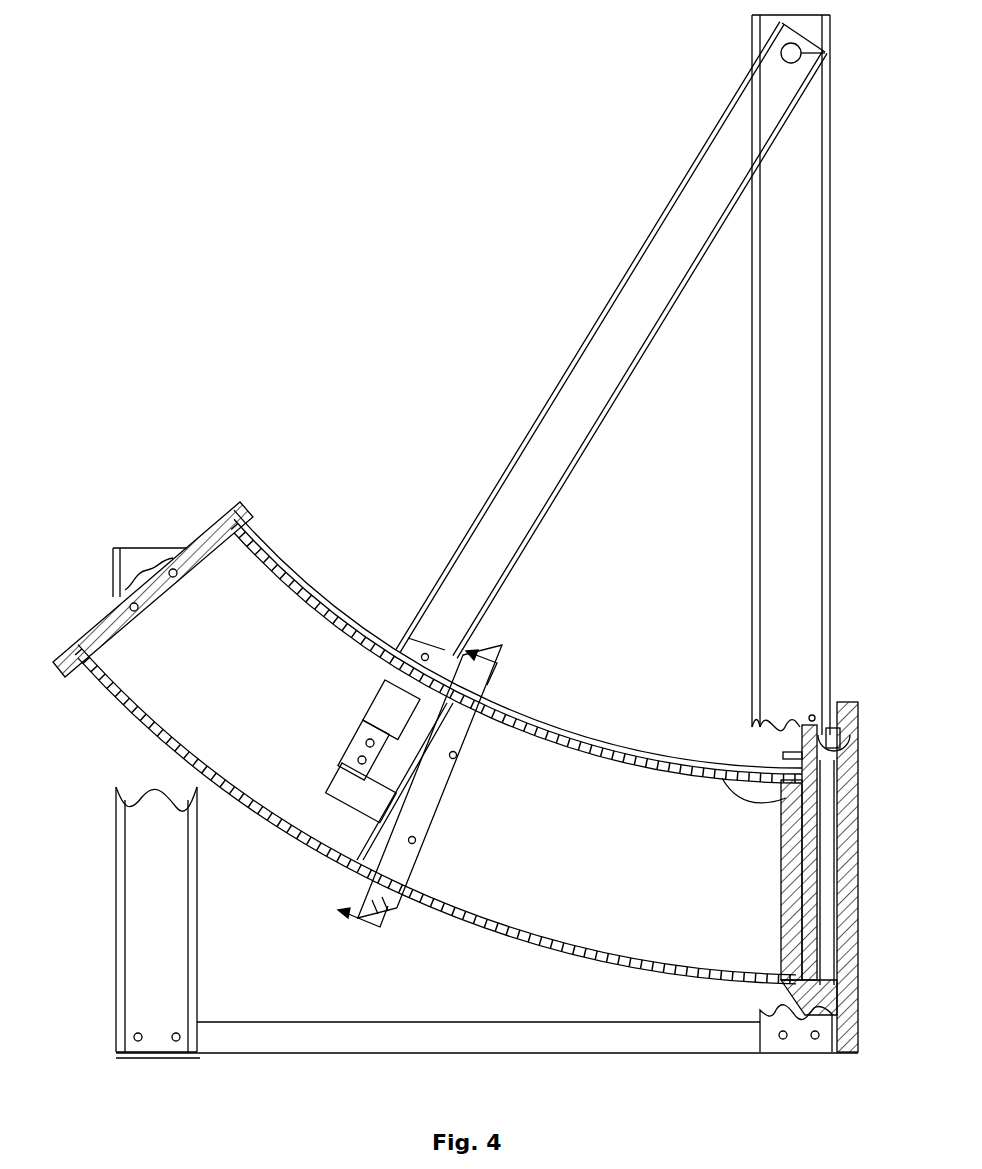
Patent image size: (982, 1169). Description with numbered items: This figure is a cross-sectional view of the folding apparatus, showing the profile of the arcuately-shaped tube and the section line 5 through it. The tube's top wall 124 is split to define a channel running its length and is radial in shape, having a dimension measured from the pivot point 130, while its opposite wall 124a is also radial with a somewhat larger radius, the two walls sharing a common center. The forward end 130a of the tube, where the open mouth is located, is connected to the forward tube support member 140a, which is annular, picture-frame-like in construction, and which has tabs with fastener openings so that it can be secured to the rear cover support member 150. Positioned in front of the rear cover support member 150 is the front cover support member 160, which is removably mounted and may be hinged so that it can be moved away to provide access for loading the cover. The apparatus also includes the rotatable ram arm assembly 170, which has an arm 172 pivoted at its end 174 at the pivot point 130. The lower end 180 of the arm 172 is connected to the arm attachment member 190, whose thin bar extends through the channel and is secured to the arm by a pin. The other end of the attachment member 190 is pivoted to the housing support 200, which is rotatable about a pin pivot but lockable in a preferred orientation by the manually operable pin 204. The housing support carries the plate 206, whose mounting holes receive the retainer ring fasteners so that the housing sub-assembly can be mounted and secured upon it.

The top wall 124 is at (317, 590).
The opposite wall 124a is at (445, 904).
The pivot point 130 is at (828, 50).
The forward end 130a is at (718, 766).
The forward tube support member 140a is at (781, 874).
The rear cover support member 150 is at (860, 746).
The front cover support member 160 is at (842, 702).
The rotatable ram arm assembly 170 is at (611, 340).
The arm 172 is at (610, 337).
The end 174 is at (717, 136).
The lower end 180 is at (414, 635).
The arm attachment member 190 is at (356, 758).
The housing support 200 is at (344, 792).
The manually operable pin 204 is at (366, 736).
The plate 206 is at (359, 850).
The section line 5- 5 is at (403, 776).